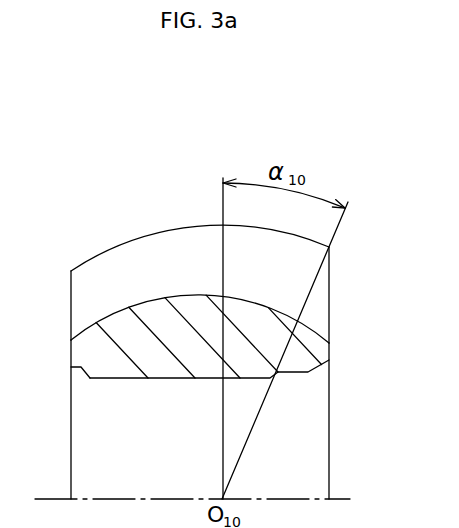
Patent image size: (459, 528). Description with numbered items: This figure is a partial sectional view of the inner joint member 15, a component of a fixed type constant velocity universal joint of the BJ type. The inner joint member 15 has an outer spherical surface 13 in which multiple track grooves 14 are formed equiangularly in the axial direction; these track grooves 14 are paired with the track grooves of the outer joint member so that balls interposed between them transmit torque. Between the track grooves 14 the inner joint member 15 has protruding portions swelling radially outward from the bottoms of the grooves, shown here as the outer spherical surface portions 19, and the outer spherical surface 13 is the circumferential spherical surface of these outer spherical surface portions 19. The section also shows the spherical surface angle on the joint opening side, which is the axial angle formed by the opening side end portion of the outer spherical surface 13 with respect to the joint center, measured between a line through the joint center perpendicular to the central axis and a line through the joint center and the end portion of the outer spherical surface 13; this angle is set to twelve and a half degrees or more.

The outer spherical surface 13 is at (103, 252).
The outer spherical surface portions 19 is at (160, 255).
The track grooves 14 is at (308, 325).
The inner joint member 15 is at (95, 348).